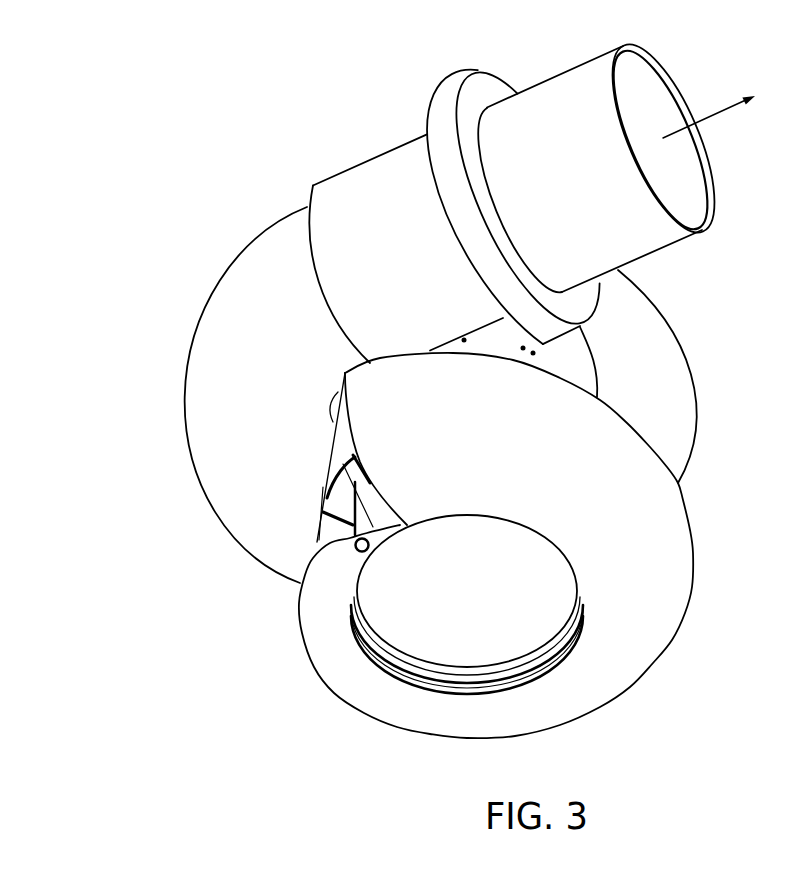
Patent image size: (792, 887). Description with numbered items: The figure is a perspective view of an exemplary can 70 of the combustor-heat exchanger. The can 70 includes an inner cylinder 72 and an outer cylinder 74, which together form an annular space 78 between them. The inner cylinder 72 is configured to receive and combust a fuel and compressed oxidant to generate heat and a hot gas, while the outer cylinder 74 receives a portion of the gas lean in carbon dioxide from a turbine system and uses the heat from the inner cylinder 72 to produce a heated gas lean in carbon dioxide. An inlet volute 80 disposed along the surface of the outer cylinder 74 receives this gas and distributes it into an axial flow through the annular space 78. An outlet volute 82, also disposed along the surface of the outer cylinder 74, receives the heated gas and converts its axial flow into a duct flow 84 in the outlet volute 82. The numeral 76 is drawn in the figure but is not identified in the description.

The can 70 is at (260, 47).
The inner cylinder 72 is at (484, 590).
The outer cylinder 74 is at (583, 377).
The hinge 76 is at (372, 525).
The annular space 78 is at (362, 483).
The inlet volute 80 is at (683, 555).
The outlet volute 82 is at (200, 389).
The duct flow 84 is at (711, 108).